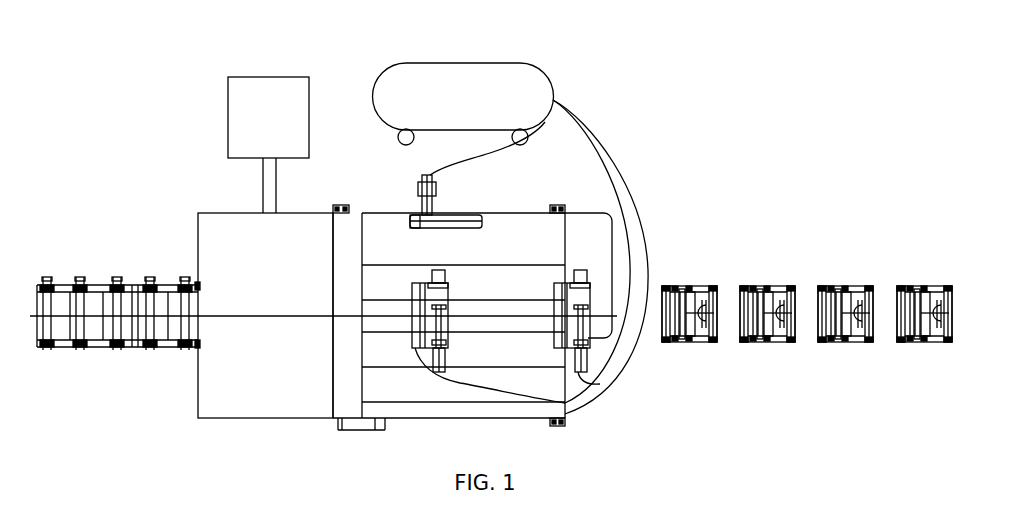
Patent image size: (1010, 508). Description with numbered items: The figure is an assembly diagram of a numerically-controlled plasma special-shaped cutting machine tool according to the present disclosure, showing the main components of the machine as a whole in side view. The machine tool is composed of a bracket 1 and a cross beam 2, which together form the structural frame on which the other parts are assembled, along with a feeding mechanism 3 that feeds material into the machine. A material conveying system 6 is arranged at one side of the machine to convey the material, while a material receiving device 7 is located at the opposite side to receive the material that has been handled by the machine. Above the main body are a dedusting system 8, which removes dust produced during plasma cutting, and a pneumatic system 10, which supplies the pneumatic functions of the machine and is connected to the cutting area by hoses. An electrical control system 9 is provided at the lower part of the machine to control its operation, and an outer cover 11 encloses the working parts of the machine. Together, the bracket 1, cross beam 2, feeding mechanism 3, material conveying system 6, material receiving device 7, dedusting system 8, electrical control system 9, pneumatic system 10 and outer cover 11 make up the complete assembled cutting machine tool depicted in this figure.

The bracket 1 is at (497, 412).
The cross beam 2 is at (338, 402).
The feeding mechanism 3 is at (411, 345).
The material conveying system 6 is at (665, 338).
The material receiving device 7 is at (163, 343).
The dedusting system 8 is at (287, 90).
The electrical control system 9 is at (378, 430).
The pneumatic system 10 is at (397, 90).
The outer cover 11 is at (292, 397).